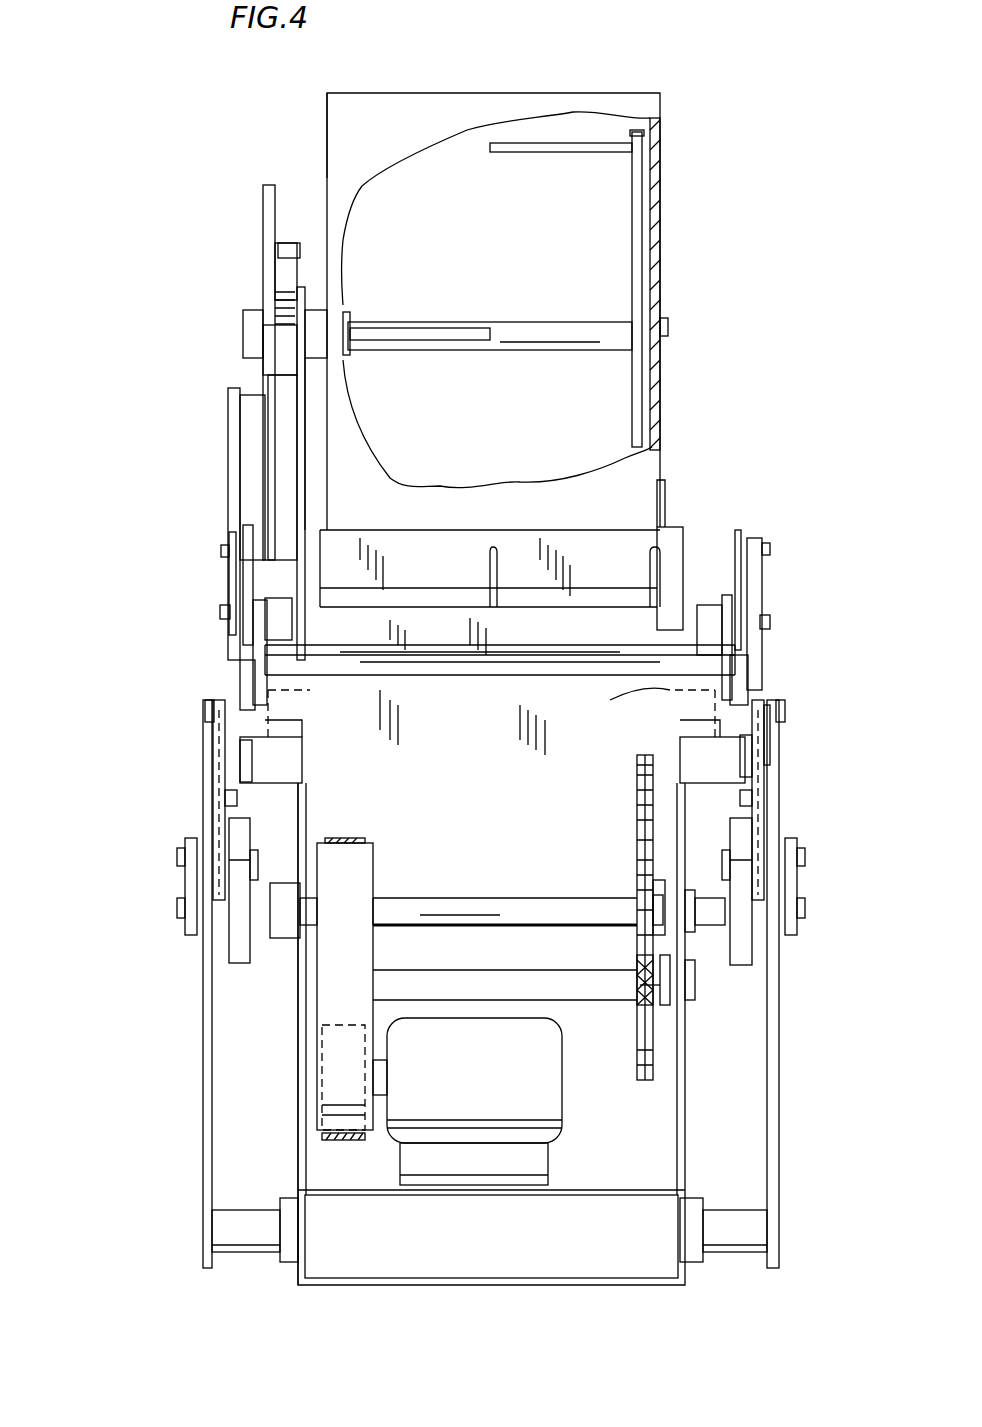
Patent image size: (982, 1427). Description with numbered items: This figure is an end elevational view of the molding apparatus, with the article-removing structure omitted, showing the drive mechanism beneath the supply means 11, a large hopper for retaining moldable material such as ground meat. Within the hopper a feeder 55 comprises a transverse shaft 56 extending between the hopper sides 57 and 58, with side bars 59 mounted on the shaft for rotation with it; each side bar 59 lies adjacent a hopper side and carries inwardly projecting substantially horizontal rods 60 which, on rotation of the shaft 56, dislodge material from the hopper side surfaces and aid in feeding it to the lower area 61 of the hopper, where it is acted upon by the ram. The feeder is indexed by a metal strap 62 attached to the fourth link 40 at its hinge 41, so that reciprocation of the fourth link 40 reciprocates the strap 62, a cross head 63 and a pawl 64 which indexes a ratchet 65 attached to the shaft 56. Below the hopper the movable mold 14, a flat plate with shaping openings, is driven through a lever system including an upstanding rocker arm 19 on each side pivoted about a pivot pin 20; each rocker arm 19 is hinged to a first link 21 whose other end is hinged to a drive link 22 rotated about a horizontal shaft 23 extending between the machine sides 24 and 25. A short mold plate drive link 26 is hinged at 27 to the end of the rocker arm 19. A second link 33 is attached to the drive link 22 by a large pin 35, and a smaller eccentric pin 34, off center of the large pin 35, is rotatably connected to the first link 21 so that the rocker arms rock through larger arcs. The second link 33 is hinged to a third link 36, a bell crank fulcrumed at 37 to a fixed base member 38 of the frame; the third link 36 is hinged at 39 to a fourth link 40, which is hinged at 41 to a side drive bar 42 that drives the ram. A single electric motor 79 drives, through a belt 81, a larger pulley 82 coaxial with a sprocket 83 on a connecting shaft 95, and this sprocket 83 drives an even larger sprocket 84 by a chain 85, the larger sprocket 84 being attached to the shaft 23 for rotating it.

The supply means 11 is at (438, 93).
The movable mold 14 is at (458, 658).
The rocker arm 19 is at (203, 1062).
The pivot pin 20 is at (258, 1215).
The first link 21 is at (197, 880).
The drive link 22 is at (248, 965).
The horizontal shaft 23 is at (182, 922).
The side of the machine 24 is at (298, 1050).
The side of the machine 25 is at (677, 1112).
The mold plate drive link 26 is at (222, 742).
The hinged connection 27 is at (205, 720).
The second link 33 is at (238, 812).
The eccentric pin 34 is at (185, 855).
The large pin 35 is at (250, 872).
The third link 36 is at (255, 660).
The fulcrum 37 is at (770, 770).
The fixed base member 38 is at (300, 770).
The hinged connection 39 is at (221, 550).
The fourth link 40 is at (245, 572).
The hinged connection 41 is at (230, 615).
The side drive bar 42 is at (295, 610).
The feeder 55 is at (600, 263).
The transverse shaft 56 is at (520, 327).
The hopper side 57 is at (662, 256).
The hopper side 58 is at (327, 178).
The side bar 59 is at (630, 205).
The horizontal rod 60 is at (562, 152).
The lower area of the hopper 61 is at (638, 545).
The metal strap 62 is at (228, 460).
The cross head 63 is at (263, 216).
The pawl 64 is at (285, 262).
The ratchet 65 is at (280, 300).
The electric motor 79 is at (495, 1100).
The belt 81 is at (338, 843).
The larger pulley 82 is at (373, 950).
The sprocket 83 is at (640, 975).
The larger sprocket 84 is at (637, 826).
The chain 85 is at (637, 880).
The connecting shaft 95 is at (462, 975).